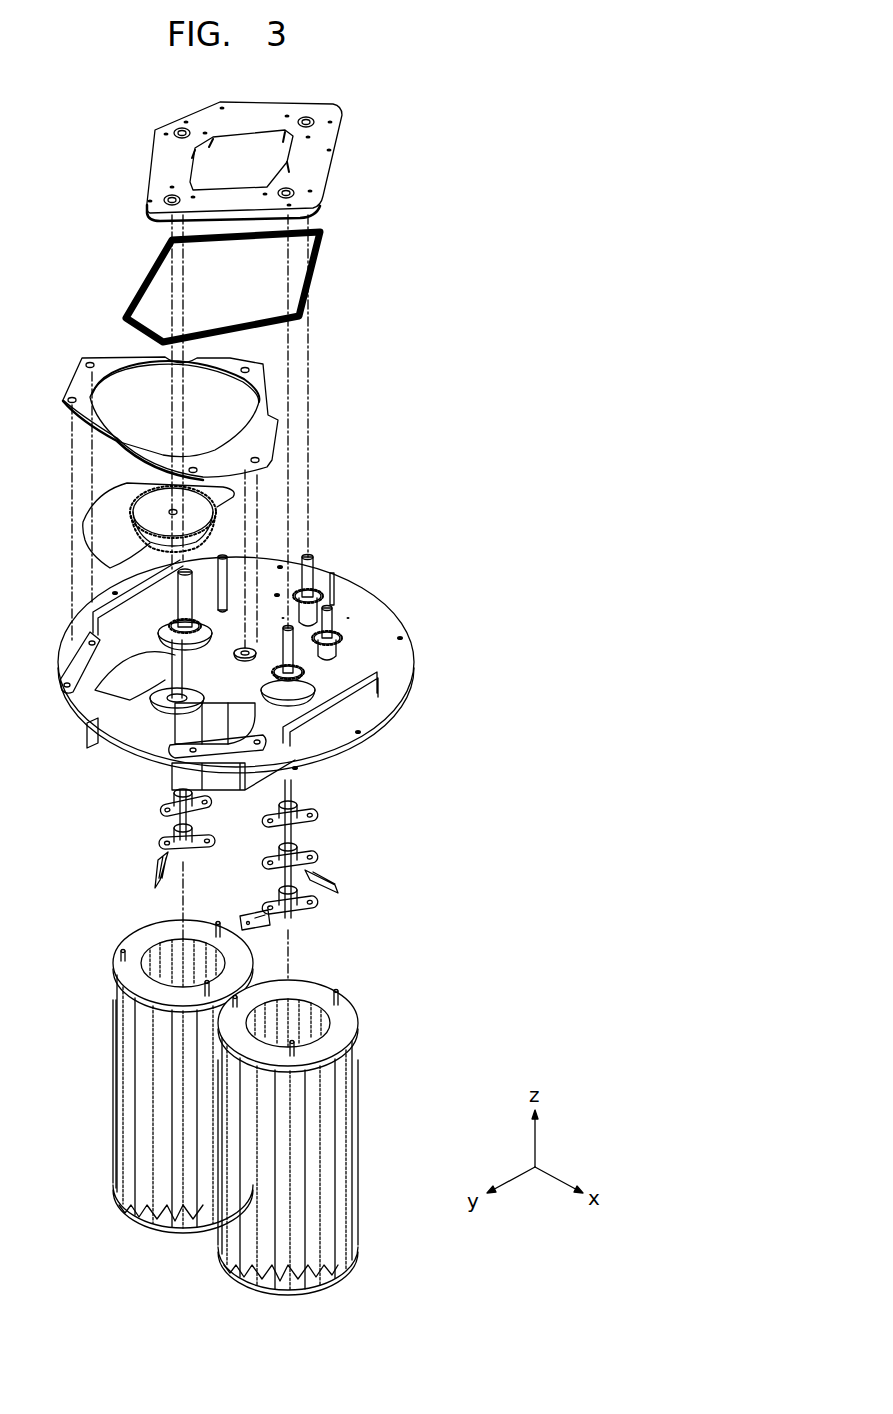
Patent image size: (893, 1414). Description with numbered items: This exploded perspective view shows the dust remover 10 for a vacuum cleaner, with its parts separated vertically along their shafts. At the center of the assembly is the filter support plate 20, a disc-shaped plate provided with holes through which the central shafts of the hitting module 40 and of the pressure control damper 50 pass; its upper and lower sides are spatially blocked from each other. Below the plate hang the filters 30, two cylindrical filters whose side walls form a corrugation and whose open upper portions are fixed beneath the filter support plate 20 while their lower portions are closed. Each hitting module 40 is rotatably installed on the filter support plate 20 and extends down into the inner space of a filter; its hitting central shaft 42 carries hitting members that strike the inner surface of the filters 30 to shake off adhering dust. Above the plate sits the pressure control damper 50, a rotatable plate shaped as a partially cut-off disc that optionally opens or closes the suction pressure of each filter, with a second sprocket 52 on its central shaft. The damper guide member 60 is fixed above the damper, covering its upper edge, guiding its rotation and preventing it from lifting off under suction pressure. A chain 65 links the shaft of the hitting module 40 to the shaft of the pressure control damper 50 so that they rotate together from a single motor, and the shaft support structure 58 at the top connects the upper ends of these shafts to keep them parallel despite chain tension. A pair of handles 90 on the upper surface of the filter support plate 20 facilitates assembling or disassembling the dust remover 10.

The dust remover 10 is at (432, 138).
The shaft support structure 58 is at (165, 164).
The chain 65 is at (128, 302).
The damper guide member 60 is at (80, 384).
The second sprocket 52 is at (143, 512).
The pressure control damper 50 is at (98, 537).
The filter support plate 20 is at (375, 607).
The handles 90 is at (400, 665).
The hitting central shaft 42 is at (185, 818).
The hitting module 40 is at (143, 840).
The filters 30 is at (237, 1233).